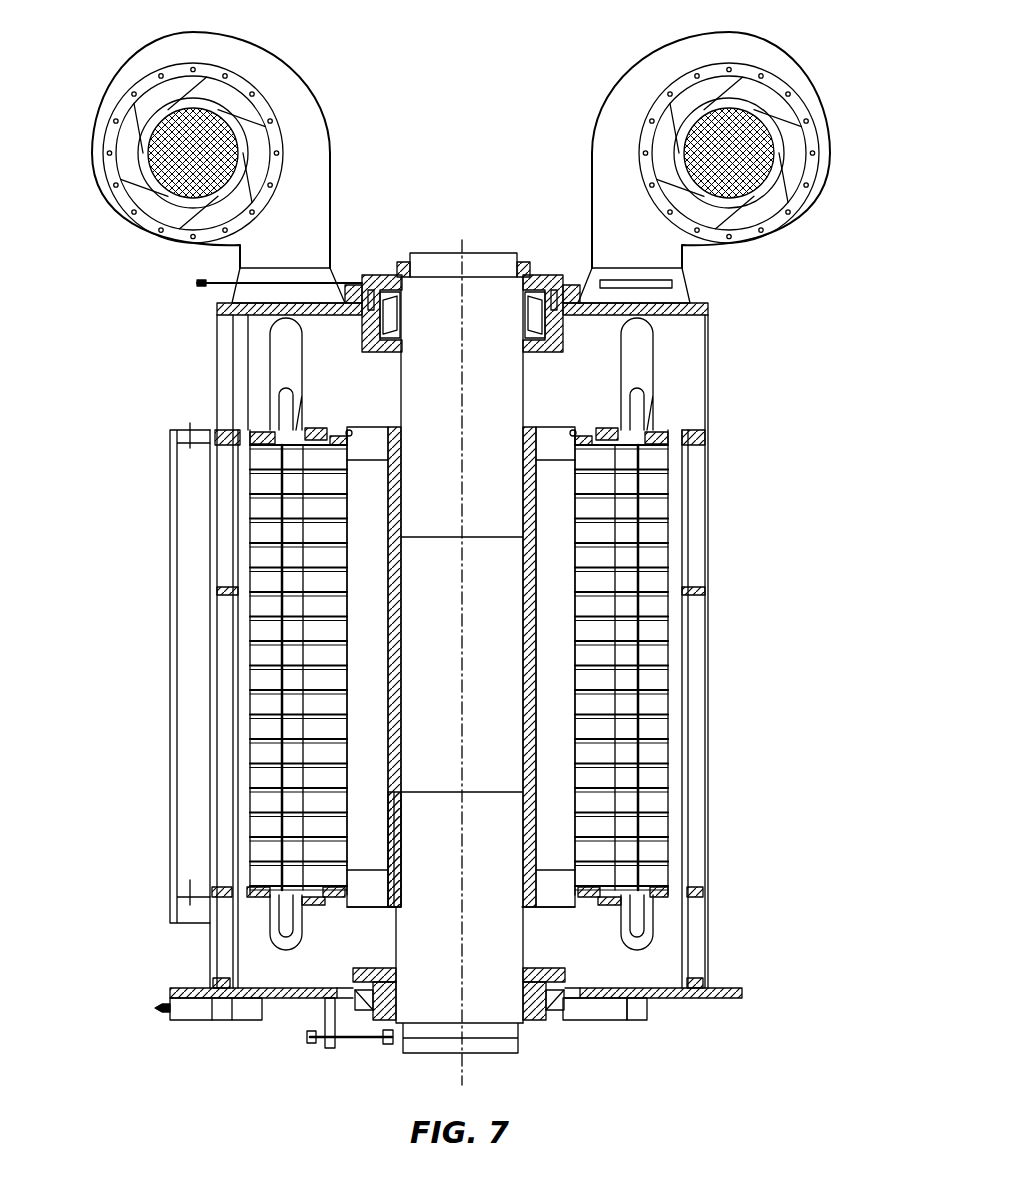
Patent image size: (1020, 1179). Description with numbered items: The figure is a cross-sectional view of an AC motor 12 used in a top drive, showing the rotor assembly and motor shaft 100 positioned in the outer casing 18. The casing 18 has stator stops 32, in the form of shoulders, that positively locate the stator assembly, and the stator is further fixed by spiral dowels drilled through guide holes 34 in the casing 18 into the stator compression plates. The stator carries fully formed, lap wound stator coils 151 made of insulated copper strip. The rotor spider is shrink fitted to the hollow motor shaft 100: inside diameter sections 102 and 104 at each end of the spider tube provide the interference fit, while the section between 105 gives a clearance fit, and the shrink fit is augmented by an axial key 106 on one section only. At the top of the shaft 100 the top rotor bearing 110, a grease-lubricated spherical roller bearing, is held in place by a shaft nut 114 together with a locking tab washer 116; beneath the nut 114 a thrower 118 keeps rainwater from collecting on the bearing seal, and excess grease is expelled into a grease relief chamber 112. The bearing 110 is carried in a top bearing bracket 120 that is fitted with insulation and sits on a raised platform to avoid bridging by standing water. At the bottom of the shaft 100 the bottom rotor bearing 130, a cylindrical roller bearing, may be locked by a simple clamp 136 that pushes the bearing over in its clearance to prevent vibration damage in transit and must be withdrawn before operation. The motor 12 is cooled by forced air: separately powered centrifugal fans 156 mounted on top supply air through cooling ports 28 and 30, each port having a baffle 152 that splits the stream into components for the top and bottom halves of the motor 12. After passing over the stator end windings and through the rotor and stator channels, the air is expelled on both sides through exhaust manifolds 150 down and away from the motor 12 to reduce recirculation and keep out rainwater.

The motor 12 is at (138, 526).
The outer casing 18 is at (712, 522).
The cooling port 28 is at (678, 293).
The cooling port 30 is at (257, 292).
The stator stop 32 is at (227, 428).
The guide hole 34 is at (210, 923).
The motor shaft 100 is at (512, 934).
The inside diameter section 102 is at (405, 835).
The inside diameter section 104 is at (401, 488).
The section between 105 is at (403, 683).
The axial key 106 is at (405, 857).
The top rotor bearing 110 is at (407, 318).
The grease relief chamber 112 is at (575, 287).
The shaft nut 114 is at (398, 270).
The locking tab washer 116 is at (403, 262).
The thrower 118 is at (345, 266).
The top bearing bracket 120 is at (533, 350).
The bottom rotor bearing 130 is at (537, 973).
The clamp 136 is at (327, 1048).
The exhaust manifold 150 is at (157, 38).
The stator coil 151 is at (638, 680).
The baffle 152 is at (270, 364).
The centrifugal fan 156 is at (142, 117).